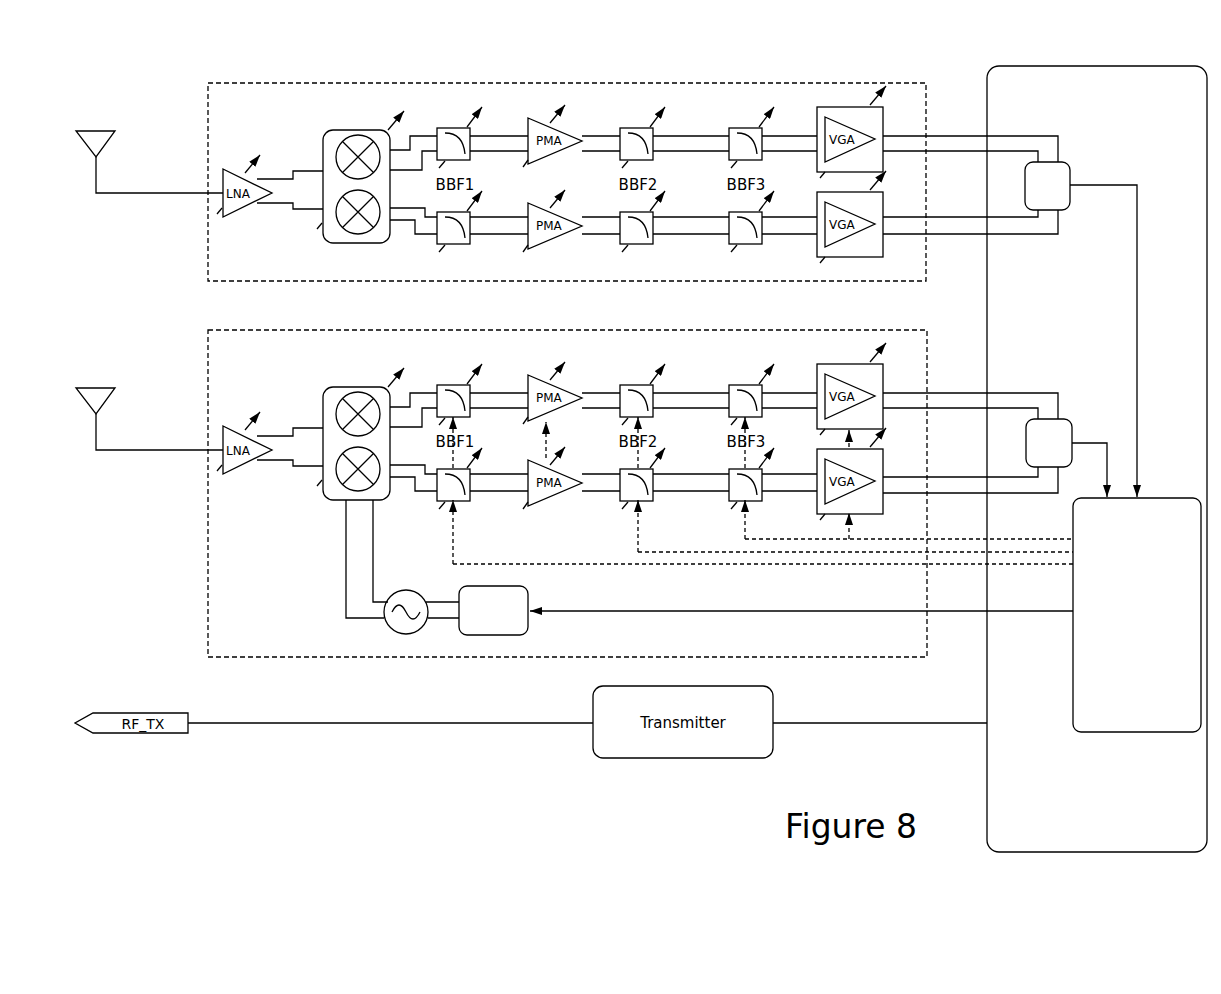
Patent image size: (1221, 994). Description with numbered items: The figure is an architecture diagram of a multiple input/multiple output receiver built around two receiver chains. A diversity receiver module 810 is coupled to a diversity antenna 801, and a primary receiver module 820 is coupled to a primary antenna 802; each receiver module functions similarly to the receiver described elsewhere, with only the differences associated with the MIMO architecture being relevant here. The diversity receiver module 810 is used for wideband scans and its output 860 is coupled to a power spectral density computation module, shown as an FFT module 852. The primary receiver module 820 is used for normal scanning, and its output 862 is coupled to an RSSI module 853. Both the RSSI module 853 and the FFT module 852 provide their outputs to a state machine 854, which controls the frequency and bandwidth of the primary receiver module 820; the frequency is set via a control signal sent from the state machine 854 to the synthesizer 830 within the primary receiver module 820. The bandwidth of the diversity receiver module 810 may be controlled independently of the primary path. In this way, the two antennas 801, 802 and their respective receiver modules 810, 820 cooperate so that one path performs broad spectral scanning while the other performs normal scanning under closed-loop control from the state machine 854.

The diversity antenna 801 is at (89, 130).
The primary antenna 802 is at (89, 387).
The diversity receiver module 810 is at (283, 83).
The primary receiver module 820 is at (207, 552).
The synthesizer 830 is at (495, 636).
The FFT module 852 is at (1081, 329).
The RSSI module 853 is at (1066, 458).
The state machine 854 is at (1124, 655).
The first receiver output 860 is at (953, 136).
The second receiver output 862 is at (953, 393).